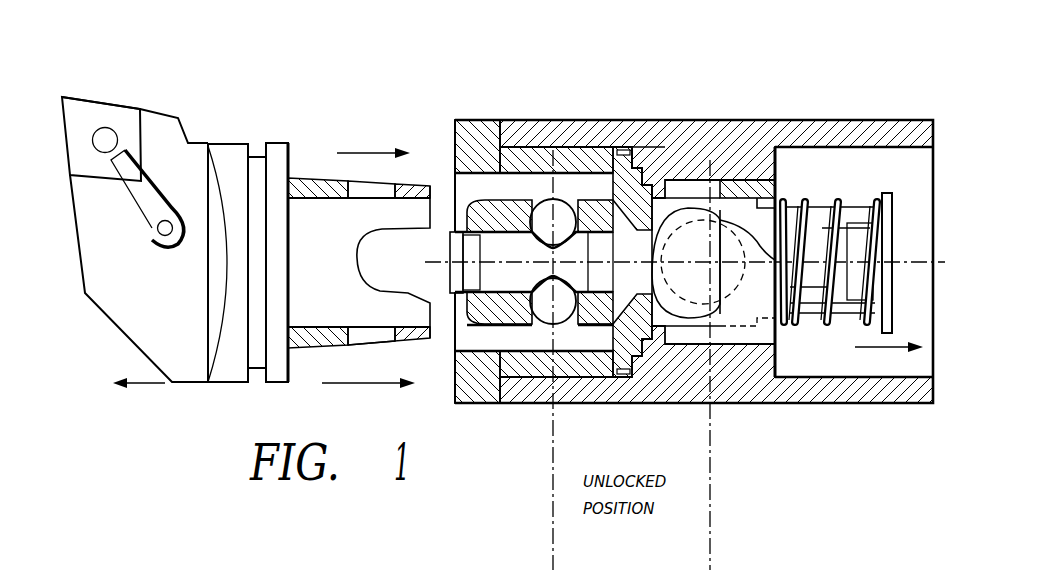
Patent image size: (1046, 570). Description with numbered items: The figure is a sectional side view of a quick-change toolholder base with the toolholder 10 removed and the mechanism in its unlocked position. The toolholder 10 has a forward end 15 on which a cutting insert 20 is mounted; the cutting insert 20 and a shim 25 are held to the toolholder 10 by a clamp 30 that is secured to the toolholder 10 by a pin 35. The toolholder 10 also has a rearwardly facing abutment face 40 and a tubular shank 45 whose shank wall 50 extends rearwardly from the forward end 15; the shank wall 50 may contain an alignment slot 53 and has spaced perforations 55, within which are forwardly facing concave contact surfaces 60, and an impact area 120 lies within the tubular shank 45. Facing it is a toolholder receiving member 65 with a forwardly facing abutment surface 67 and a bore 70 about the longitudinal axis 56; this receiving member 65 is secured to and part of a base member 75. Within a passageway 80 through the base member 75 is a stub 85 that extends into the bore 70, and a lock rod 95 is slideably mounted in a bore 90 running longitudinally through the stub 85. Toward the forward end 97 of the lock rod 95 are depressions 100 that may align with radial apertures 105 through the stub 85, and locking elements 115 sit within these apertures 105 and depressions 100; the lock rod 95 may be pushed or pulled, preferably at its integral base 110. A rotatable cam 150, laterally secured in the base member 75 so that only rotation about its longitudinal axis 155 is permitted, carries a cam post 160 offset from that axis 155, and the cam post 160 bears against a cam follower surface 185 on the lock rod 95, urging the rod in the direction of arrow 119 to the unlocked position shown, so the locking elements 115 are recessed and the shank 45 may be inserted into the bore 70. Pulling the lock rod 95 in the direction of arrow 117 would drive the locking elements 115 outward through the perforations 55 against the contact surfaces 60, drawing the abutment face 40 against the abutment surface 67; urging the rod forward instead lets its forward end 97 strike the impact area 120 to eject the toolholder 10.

The toolholder 10 is at (254, 128).
The forward end 15 is at (102, 336).
The cutting insert 20 is at (95, 100).
The shim 25 is at (88, 74).
The clamp 30 is at (138, 198).
The pin 35 is at (153, 240).
The rearwardly facing abutment face 40 is at (288, 143).
The tubular shank 45 is at (330, 192).
The shank wall 50 is at (318, 180).
The alignment slot 53 is at (362, 279).
The perforations 55 is at (372, 339).
The longitudinal axis 56 is at (904, 262).
The forwardly facing concave contact surfaces 60 is at (401, 330).
The toolholder receiving member 65 is at (478, 120).
The forwardly facing abutment surface 67 is at (452, 150).
The bore 70 is at (513, 120).
The base member 75 is at (657, 112).
The passageway 80 is at (852, 180).
The stub 85 is at (458, 331).
The bore 90 is at (584, 330).
The lock rod 95 is at (460, 340).
The forward end 97 is at (452, 274).
The depressions 100 is at (578, 330).
The radial apertures 105 is at (500, 360).
The base 110 is at (628, 190).
The locking elements 115 is at (556, 199).
The arrow 117 is at (878, 380).
The arrow 119 is at (150, 388).
The impact area 120 is at (290, 233).
The rotatable cam 150 is at (728, 200).
The longitudinal axis 155 is at (722, 262).
The cam post 160 is at (676, 214).
The cam follower surface 185 is at (673, 182).